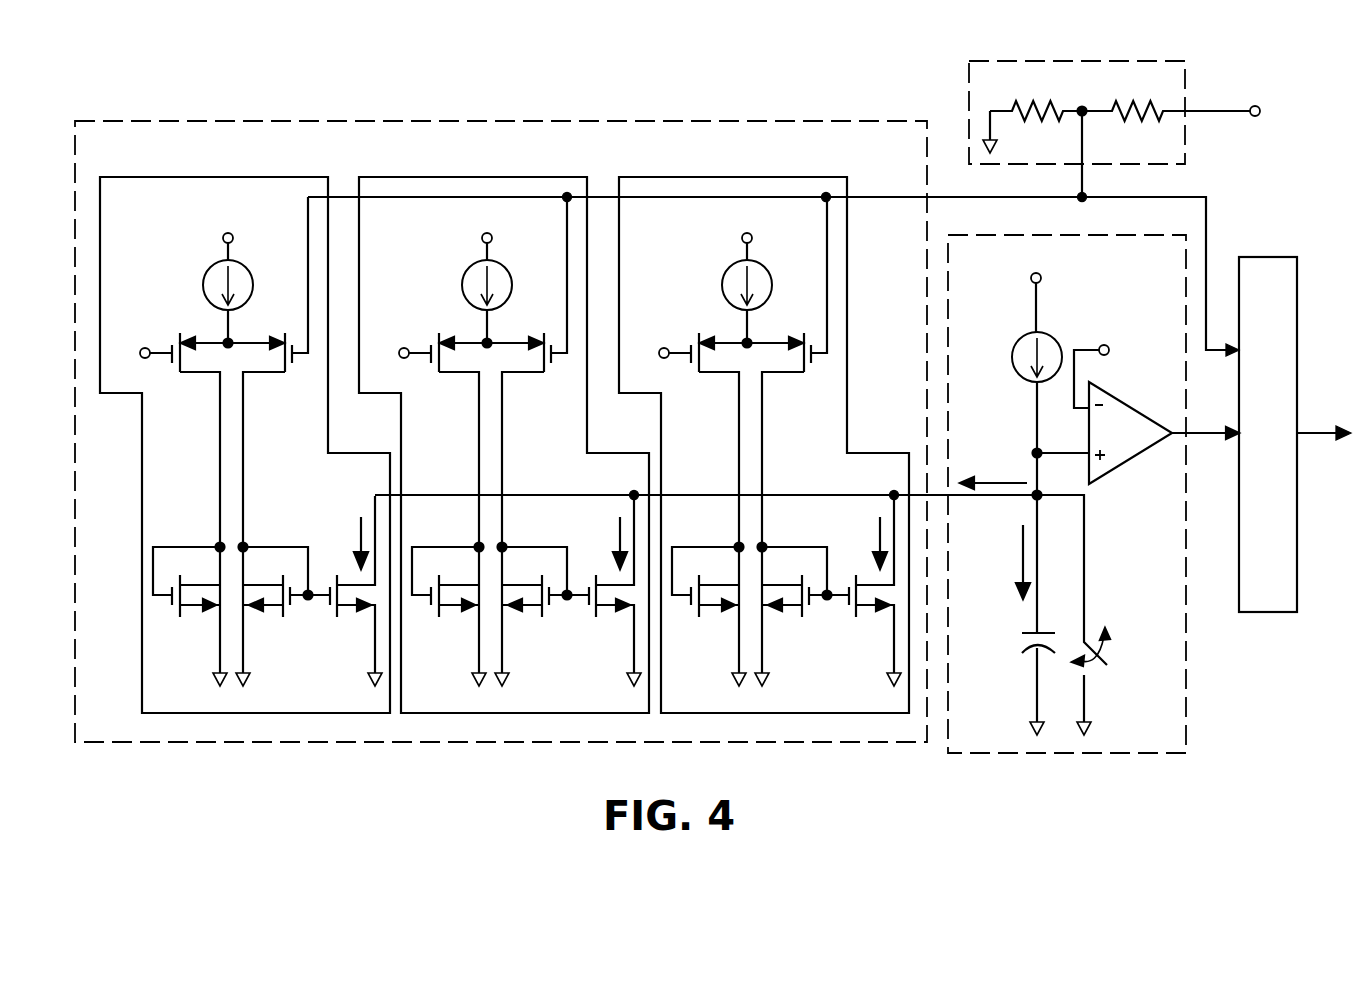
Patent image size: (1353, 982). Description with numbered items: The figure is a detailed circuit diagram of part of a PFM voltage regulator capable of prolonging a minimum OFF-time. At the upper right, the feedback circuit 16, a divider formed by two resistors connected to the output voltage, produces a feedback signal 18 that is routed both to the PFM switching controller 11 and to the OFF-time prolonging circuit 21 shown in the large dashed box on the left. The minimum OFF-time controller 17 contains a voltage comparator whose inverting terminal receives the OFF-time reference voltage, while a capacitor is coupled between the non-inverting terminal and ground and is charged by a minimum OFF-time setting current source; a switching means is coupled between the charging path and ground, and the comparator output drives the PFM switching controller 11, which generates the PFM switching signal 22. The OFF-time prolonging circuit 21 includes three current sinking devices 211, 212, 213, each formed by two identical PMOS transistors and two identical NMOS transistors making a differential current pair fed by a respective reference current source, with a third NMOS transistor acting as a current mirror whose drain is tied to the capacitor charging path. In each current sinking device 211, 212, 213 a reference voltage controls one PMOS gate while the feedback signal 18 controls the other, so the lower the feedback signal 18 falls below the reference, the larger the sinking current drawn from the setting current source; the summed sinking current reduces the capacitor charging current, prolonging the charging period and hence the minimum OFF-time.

The PFM switching controller 11 is at (1264, 257).
The feedback circuit 16 is at (1185, 138).
The minimum OFF-time controller 17 is at (1186, 682).
The feedback signal 18 is at (941, 195).
The OFF-time prolonging circuit 21 is at (780, 119).
The PFM switching signal 22 is at (1313, 431).
The current sinking device 211 is at (786, 174).
The current sinking device 212 is at (518, 176).
The current sinking device 213 is at (259, 176).